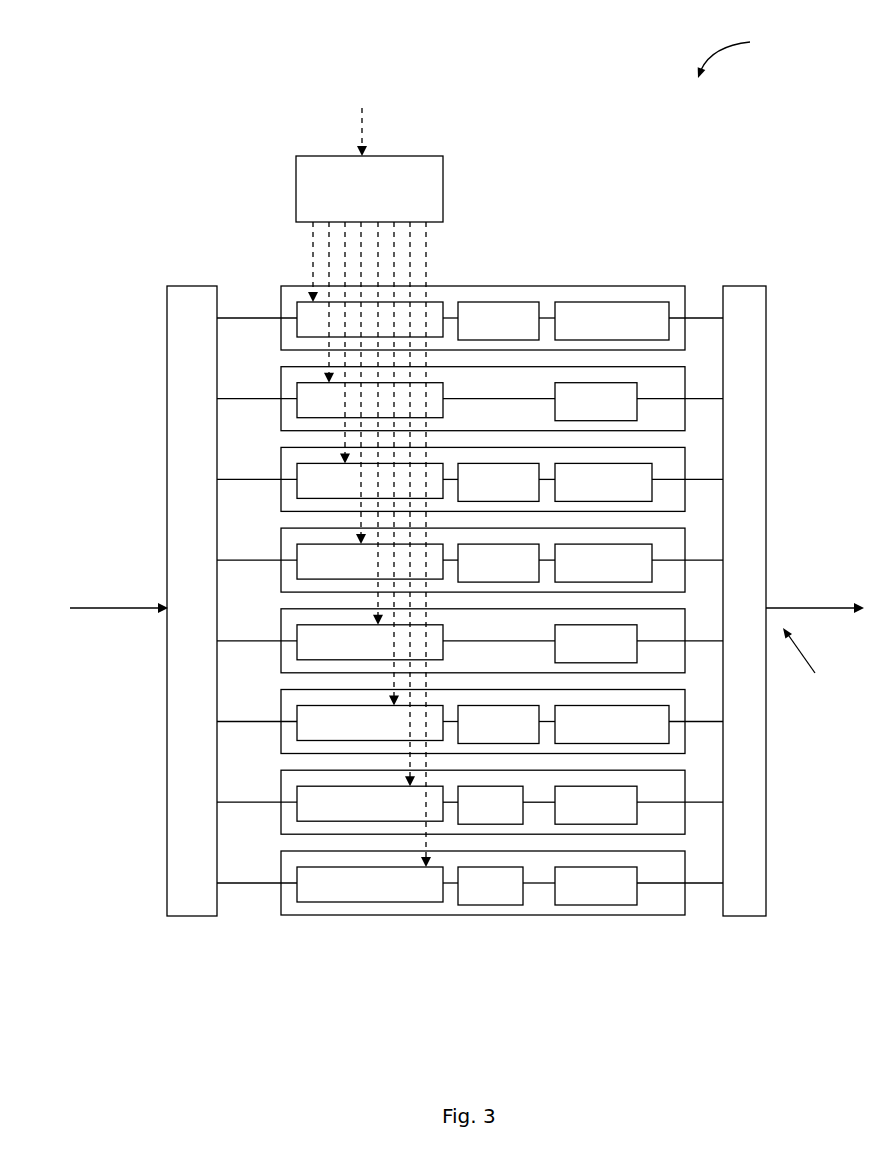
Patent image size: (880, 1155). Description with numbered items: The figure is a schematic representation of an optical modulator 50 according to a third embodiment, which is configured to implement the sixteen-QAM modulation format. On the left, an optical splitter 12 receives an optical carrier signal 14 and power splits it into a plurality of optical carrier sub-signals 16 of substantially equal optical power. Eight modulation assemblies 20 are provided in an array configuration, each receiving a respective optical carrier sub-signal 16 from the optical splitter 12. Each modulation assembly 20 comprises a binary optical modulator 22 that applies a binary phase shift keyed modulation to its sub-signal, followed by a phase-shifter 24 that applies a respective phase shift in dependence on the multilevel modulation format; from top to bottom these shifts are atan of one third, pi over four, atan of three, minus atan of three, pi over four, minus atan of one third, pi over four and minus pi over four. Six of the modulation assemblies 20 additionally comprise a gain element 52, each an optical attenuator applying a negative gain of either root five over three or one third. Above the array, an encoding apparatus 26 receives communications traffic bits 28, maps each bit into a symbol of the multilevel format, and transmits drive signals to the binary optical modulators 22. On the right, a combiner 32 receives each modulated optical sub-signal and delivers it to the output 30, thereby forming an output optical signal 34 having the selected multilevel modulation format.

The optical splitter 12 is at (183, 905).
The optical carrier signal 14 is at (120, 608).
The optical carrier sub-signal 16 is at (232, 888).
The modulation assembly 20 is at (523, 284).
The binary optical modulator 22 is at (425, 319).
The phase-shifter 24 is at (604, 302).
The encoding apparatus 26 is at (313, 190).
The communications traffic bits 28 is at (362, 124).
The output 30 is at (810, 666).
The combiner 32 is at (748, 302).
The output optical signal 34 is at (832, 608).
The optical modulator 50 is at (743, 48).
The gain element 52 is at (490, 900).